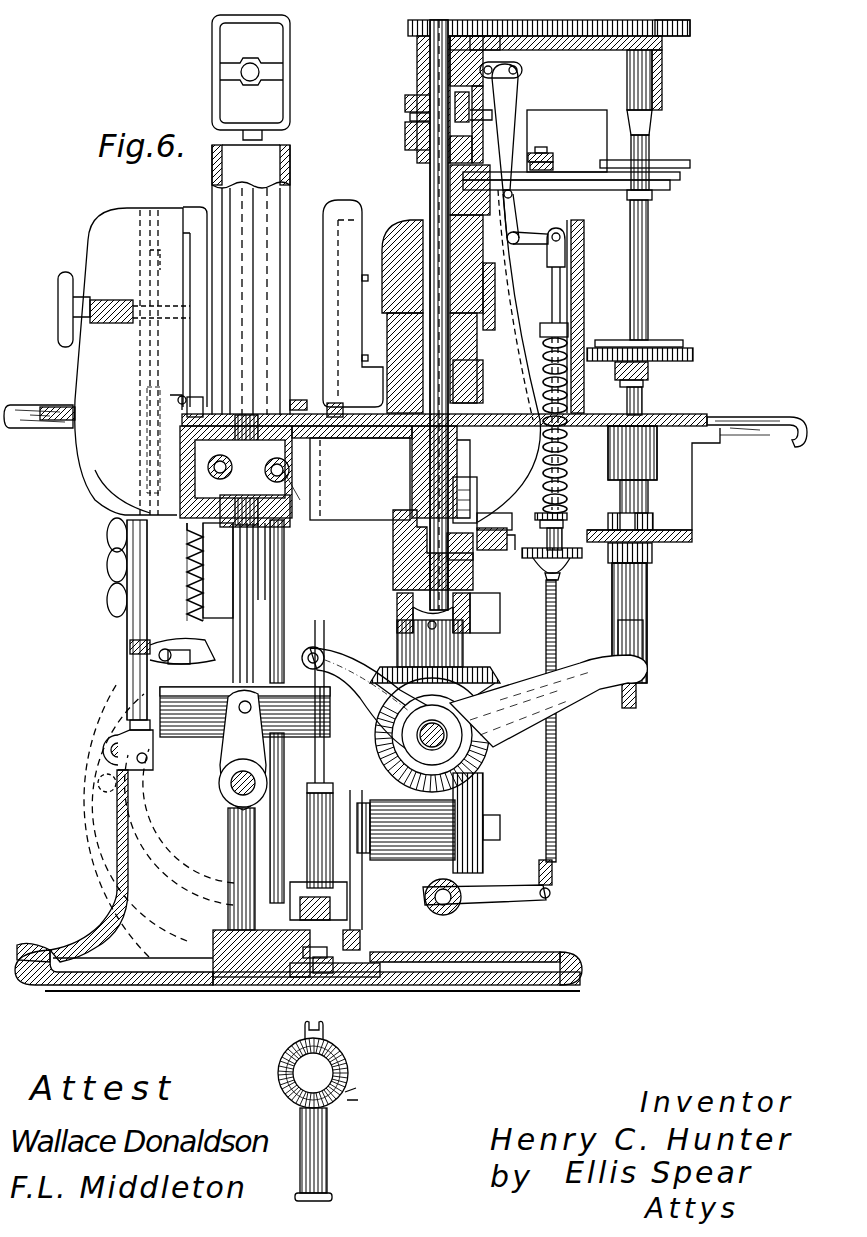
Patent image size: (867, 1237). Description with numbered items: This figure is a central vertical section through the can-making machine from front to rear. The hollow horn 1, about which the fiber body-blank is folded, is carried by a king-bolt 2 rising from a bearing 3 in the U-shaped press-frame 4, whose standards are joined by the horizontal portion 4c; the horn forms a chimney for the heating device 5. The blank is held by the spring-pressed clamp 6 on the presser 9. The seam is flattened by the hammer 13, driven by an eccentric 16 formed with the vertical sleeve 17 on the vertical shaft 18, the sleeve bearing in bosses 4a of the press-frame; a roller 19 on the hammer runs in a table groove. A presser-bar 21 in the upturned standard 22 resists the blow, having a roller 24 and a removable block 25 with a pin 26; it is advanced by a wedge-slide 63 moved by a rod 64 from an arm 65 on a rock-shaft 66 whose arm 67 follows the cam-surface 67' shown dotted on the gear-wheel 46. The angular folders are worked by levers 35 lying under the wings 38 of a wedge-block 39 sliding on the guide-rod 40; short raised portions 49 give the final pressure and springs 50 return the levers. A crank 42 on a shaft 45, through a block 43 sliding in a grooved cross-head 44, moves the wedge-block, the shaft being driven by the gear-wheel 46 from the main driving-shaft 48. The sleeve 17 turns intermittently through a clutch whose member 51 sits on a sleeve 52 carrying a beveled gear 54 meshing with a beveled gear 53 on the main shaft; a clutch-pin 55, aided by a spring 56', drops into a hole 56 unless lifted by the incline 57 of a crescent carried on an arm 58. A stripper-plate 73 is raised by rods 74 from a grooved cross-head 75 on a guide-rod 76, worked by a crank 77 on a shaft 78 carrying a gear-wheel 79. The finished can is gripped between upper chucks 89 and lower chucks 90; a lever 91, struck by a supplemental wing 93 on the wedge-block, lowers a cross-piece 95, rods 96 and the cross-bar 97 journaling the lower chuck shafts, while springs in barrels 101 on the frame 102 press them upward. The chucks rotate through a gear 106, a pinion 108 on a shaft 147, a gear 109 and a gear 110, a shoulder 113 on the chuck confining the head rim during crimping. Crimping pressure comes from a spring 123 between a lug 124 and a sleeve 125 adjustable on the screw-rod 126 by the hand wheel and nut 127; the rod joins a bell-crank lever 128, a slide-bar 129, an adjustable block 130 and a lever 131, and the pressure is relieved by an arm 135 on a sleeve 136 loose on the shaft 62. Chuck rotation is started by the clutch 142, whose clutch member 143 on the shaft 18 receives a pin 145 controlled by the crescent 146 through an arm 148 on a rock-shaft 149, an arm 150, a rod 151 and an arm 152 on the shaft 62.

The spindle 1 is at (212, 85).
The spindle shaft 2 is at (247, 415).
The feed screw 3 is at (233, 540).
The table 4 is at (508, 400).
The table bearing 4a is at (498, 372).
The housing bottom 4c is at (123, 483).
The frame bearing ring 5 is at (340, 1052).
The handle 6 is at (205, 272).
The guide 9 is at (140, 220).
The bracket 13 is at (325, 215).
The post 16 is at (584, 288).
The bearing block 17 is at (460, 440).
The bearing liner 18 is at (470, 460).
The frame cavity 19 is at (358, 430).
The slide 21 is at (195, 215).
The slide plate 22 is at (128, 315).
The pivot arm 24 is at (183, 400).
The stop block 25 is at (198, 400).
The pivot pin 26 is at (178, 400).
The roller 35 is at (108, 557).
The roller 38 is at (183, 563).
The nut 39 is at (225, 570).
The rod 40 is at (230, 843).
The lever 42 is at (243, 750).
The cross bar 43 is at (222, 737).
The curved arm 44 is at (372, 714).
The lever hub 45 is at (219, 782).
The base 46 is at (88, 850).
The pinion 48 is at (484, 778).
The spring 49 is at (187, 545).
The collar 50 is at (130, 640).
The plate 51 is at (480, 552).
The cup 52 is at (413, 620).
The bevel gear 53 is at (478, 722).
The bevel pinion 54 is at (475, 670).
The block 55 is at (478, 520).
The hatched block 56 is at (420, 571).
The block 56' is at (488, 489).
The disc 57 is at (560, 512).
The collar 58 is at (565, 524).
The shaft 62 is at (440, 912).
The housing 63 is at (140, 230).
The roller 64 is at (145, 538).
The link 65 is at (148, 772).
The pivot 66 is at (112, 752).
The pin 67 is at (73, 793).
The cam path 67' is at (159, 823).
The foot 73 is at (297, 400).
The rod 74 is at (315, 760).
The base block 75 is at (280, 975).
The rod sleeve 76 is at (308, 840).
The bracket 77 is at (378, 977).
The end cap 78 is at (500, 828).
The spool 79 is at (470, 805).
The plate 89 is at (685, 162).
The plate 90 is at (685, 343).
The lever 91 is at (560, 690).
The pivot 93 is at (308, 648).
The hook 95 is at (637, 700).
The rod 96 is at (650, 640).
The collar 97 is at (648, 372).
The rod 101 is at (650, 600).
The bracket 102 is at (680, 512).
The rack end 106 is at (690, 30).
The rack 108 is at (408, 30).
The plate 109 is at (520, 40).
The gear 110 is at (693, 356).
The plate 113 is at (678, 181).
The spring rod 123 is at (565, 468).
The spring 124 is at (569, 334).
The disc 125 is at (572, 560).
The threaded rod 126 is at (557, 590).
The stem 127 is at (562, 576).
The link 128 is at (520, 236).
The rod 129 is at (652, 188).
The plate 130 is at (600, 174).
The bolt 131 is at (553, 153).
The rod 135 is at (547, 900).
The hub 136 is at (433, 888).
The pin 142 is at (410, 117).
The flange 143 is at (405, 141).
The flange 145 is at (405, 101).
The lever 146 is at (505, 116).
The rod 147 is at (430, 58).
The box 148 is at (500, 113).
The link 149 is at (522, 70).
The bearing 150 is at (488, 40).
The block 151 is at (523, 600).
The bar 152 is at (485, 905).